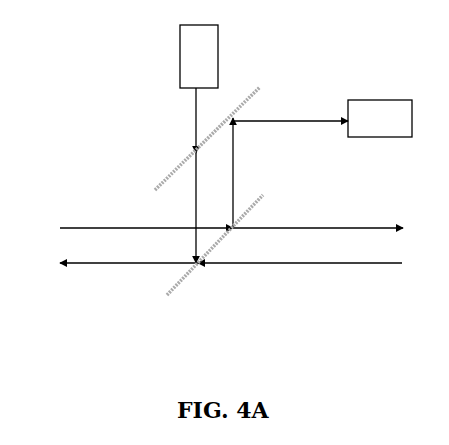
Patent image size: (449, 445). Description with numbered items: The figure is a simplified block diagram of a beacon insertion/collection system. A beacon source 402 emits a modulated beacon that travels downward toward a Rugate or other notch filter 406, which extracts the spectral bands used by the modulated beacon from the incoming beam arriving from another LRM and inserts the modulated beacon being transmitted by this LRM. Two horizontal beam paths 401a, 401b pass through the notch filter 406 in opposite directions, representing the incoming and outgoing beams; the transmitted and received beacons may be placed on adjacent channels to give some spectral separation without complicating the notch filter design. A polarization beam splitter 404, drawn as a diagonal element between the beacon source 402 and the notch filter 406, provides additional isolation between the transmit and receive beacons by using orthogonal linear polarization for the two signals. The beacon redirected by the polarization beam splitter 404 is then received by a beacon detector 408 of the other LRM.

The beacon source 402 is at (202, 58).
The polarization beam splitter 404 is at (188, 152).
The Rugate or other notch filter 406 is at (248, 213).
The beacon detector 408 is at (388, 100).
The input beam 401a is at (221, 220).
The return beam 401b is at (221, 274).